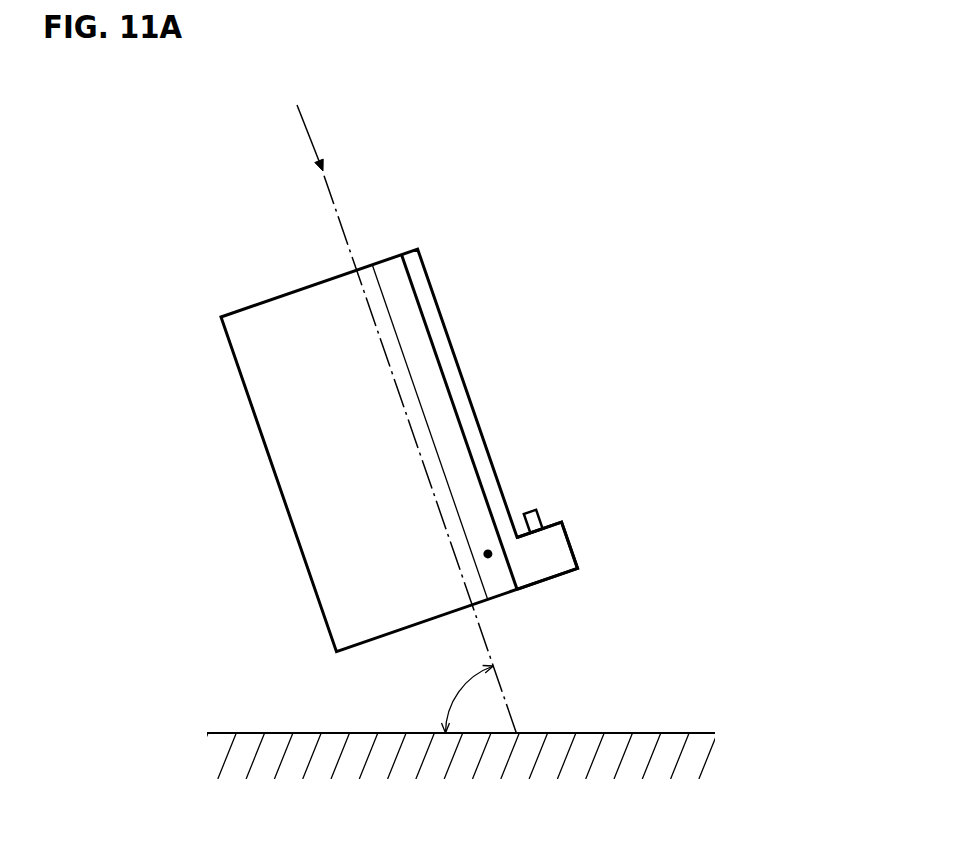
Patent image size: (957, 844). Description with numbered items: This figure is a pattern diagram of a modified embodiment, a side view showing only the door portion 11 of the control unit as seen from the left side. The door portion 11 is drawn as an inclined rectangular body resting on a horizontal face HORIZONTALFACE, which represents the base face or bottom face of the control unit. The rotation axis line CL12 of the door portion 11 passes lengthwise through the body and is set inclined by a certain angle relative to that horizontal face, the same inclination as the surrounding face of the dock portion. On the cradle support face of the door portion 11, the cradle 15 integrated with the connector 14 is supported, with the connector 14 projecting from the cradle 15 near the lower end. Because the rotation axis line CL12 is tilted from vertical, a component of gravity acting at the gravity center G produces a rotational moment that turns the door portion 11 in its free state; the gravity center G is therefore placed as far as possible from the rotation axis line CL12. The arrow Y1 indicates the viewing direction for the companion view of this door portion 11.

The door portion 11 is at (251, 306).
The rotation axis line CL12 is at (335, 203).
The arrow Y1 is at (302, 124).
The connector 14 is at (533, 508).
The cradle 15 is at (572, 535).
The gravity center G is at (490, 563).
The horizontal face HORIZONTALFACE is at (628, 732).